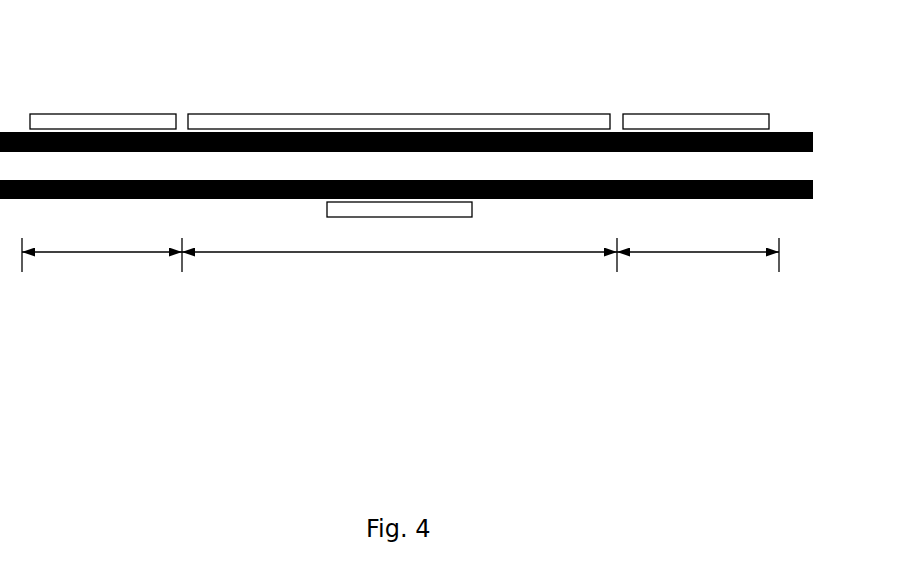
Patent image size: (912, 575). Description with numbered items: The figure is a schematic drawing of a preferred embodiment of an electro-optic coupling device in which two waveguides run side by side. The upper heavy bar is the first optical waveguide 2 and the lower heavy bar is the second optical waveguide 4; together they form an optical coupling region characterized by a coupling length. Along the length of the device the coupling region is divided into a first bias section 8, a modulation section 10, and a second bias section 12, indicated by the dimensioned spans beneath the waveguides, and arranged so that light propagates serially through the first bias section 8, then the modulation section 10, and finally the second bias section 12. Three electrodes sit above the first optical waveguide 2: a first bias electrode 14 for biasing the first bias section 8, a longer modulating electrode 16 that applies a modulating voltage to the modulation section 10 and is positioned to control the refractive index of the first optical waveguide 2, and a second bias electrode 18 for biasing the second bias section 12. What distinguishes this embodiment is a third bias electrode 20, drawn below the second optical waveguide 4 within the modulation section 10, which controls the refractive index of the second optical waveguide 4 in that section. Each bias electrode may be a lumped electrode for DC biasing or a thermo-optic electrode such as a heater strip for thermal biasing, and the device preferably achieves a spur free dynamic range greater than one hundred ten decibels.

The first optical waveguide 2 is at (816, 142).
The second optical waveguide 4 is at (816, 190).
The first bias section 8 is at (100, 264).
The modulation section 10 is at (397, 264).
The second bias section 12 is at (707, 264).
The first bias electrode 14 is at (103, 112).
The modulating electrode 16 is at (400, 112).
The second bias electrode 18 is at (697, 112).
The third bias electrode 20 is at (325, 208).